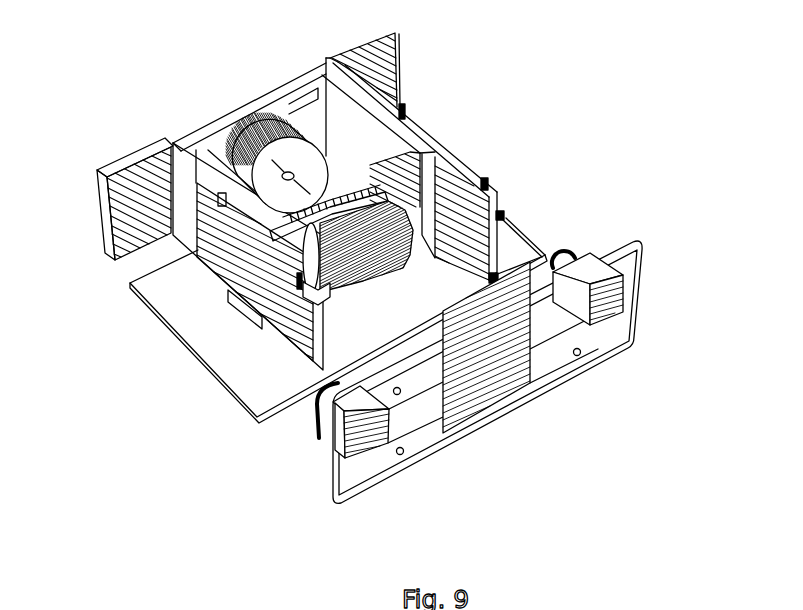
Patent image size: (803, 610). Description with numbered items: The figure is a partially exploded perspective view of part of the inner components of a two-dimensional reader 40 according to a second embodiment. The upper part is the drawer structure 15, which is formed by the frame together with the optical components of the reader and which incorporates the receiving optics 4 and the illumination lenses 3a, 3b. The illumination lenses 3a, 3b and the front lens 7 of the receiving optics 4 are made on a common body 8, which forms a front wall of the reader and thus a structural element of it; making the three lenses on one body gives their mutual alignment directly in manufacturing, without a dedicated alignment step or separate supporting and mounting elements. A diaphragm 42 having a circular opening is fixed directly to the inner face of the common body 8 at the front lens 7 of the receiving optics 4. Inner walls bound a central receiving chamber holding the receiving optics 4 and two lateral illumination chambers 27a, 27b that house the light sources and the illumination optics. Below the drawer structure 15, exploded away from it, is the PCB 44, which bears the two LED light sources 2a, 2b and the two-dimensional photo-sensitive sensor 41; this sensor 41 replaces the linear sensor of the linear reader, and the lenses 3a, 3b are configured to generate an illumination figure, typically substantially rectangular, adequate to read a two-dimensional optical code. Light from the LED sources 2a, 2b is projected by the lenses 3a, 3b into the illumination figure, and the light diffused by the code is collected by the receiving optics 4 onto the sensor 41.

The drawer structure 15 is at (158, 100).
The common body 8 is at (100, 146).
The lens 3a is at (107, 240).
The lens 3b is at (400, 47).
The lens 7 is at (260, 130).
The diaphragm 42 is at (303, 158).
The receiving optics 4 is at (348, 130).
The two-dimensional reader 40 is at (594, 141).
The lateral illumination chamber 27b is at (504, 243).
The lateral illumination chamber 27a is at (203, 312).
The LED light source 2a is at (322, 437).
The LED light source 2b is at (624, 297).
The two-dimensional photo-sensitive device or sensor 41 is at (507, 410).
The PCB 44 is at (583, 372).